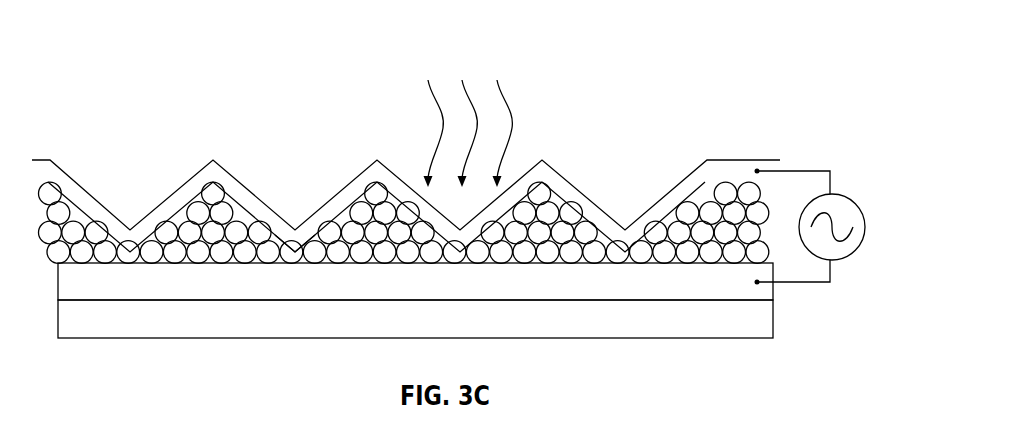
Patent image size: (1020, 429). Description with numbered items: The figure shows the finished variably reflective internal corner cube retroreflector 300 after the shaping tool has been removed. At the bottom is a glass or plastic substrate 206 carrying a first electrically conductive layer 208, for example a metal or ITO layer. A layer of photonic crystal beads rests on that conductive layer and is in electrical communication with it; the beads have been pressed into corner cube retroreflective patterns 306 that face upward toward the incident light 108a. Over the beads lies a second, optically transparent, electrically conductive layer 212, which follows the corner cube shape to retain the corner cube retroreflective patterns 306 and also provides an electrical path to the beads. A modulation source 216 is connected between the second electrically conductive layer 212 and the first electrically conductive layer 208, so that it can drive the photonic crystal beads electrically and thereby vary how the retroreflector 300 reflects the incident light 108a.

The variably reflective internal corner cube retroreflector 300 is at (154, 80).
The corner cube retroreflective patterns 306 is at (299, 226).
The incident light 108a is at (512, 133).
The second, optically transparent, electrically conductive layer 212 is at (678, 194).
The modulation source 216 is at (827, 190).
The first electrically conductive layer 208 is at (775, 292).
The glass or plastic substrate 206 is at (775, 318).